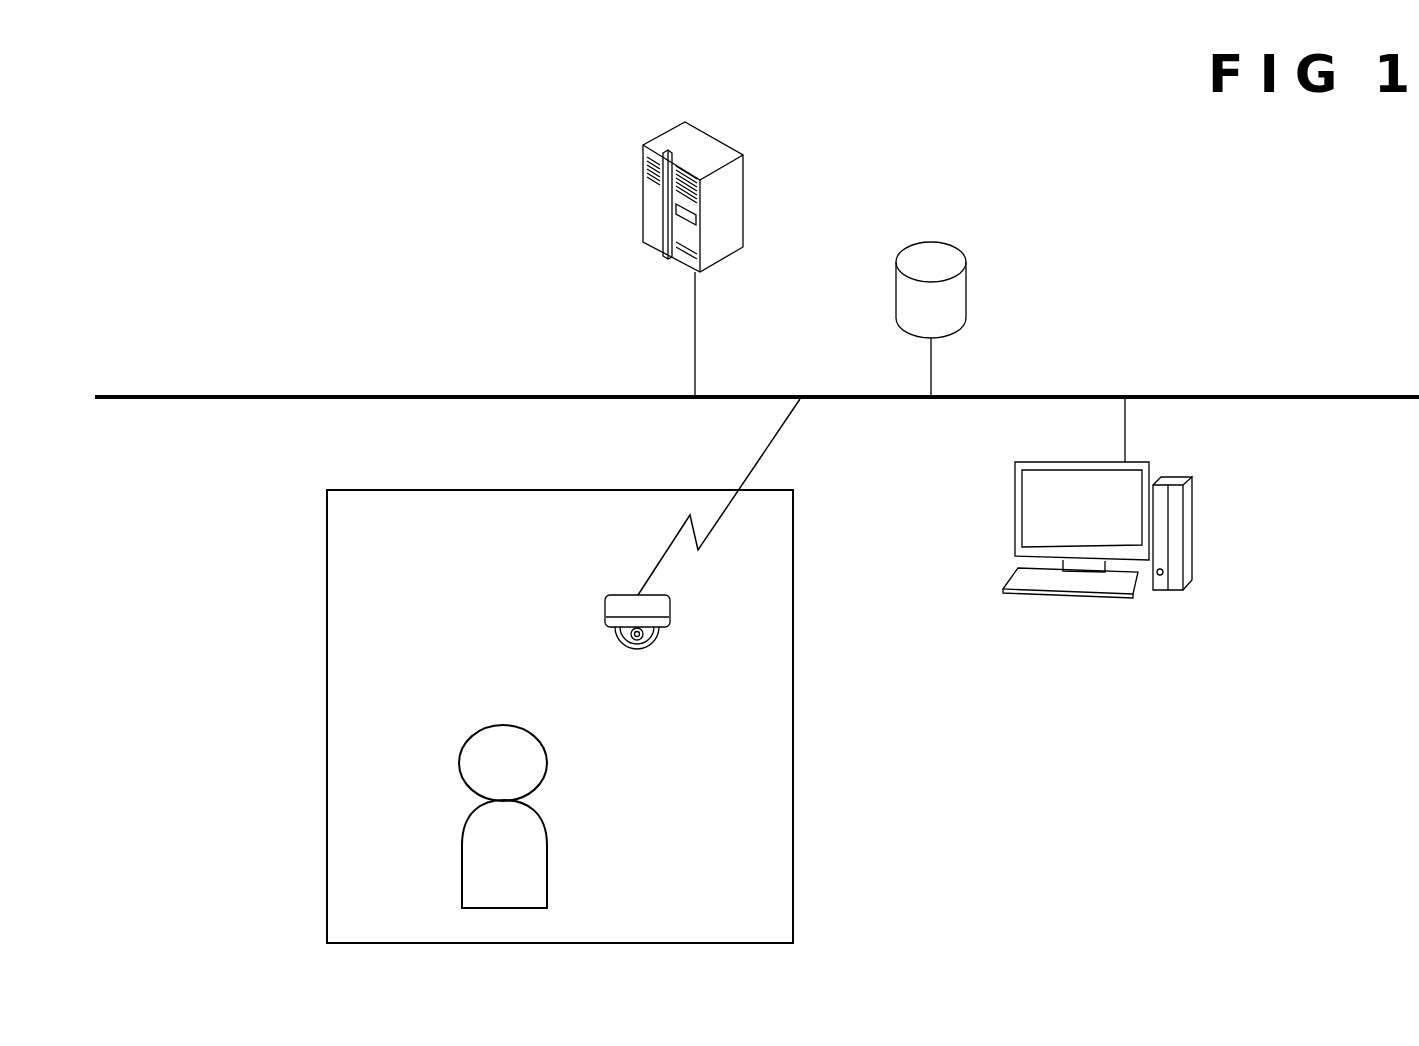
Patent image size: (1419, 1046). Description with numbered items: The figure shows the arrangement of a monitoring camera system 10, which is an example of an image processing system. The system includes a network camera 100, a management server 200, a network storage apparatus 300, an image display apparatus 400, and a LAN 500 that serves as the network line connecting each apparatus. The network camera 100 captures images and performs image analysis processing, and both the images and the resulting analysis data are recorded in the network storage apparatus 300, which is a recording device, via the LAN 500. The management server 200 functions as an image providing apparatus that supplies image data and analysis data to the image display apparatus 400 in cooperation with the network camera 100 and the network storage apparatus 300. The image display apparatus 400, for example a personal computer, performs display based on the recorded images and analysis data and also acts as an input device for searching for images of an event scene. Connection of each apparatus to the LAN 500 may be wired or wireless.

The monitoring camera system 10 is at (348, 254).
The network camera 100 is at (656, 645).
The management server 200 is at (707, 130).
The network storage apparatus 300 is at (949, 245).
The image display apparatus 400 is at (1174, 476).
The LAN 500 is at (1364, 395).